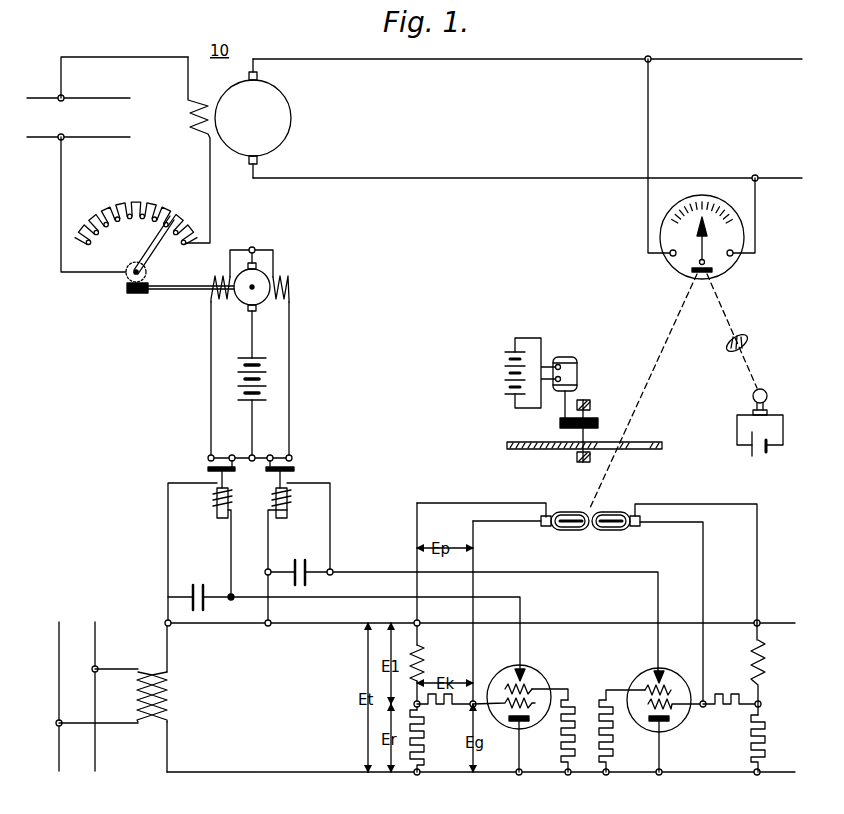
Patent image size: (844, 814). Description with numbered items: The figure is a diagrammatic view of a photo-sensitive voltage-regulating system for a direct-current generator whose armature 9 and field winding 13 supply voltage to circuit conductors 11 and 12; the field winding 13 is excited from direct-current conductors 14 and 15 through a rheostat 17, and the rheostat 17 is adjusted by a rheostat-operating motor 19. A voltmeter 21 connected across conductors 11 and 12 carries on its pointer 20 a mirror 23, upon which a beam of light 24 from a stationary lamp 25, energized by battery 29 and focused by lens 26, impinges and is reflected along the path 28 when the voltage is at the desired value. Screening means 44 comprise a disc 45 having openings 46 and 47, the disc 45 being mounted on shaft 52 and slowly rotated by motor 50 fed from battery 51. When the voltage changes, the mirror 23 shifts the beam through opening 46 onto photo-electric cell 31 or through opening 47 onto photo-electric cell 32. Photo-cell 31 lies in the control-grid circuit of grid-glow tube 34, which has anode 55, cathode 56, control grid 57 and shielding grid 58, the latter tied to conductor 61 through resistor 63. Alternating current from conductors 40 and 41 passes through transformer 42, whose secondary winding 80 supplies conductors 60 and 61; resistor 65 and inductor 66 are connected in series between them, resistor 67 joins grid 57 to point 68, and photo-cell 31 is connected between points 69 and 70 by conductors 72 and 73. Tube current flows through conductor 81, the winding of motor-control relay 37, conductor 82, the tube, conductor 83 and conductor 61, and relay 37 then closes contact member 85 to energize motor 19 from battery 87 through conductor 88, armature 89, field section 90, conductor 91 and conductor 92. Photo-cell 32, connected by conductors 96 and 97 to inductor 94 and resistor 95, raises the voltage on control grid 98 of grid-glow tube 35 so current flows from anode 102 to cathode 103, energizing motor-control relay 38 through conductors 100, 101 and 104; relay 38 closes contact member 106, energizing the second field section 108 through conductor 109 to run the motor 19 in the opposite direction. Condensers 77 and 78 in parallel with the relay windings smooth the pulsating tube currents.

The armature 9 is at (285, 95).
The circuit conductor 11 is at (521, 61).
The circuit conductor 12 is at (520, 177).
The field winding 13 is at (190, 123).
The circuit conductor 14 is at (90, 103).
The circuit conductor 15 is at (88, 142).
The rheostat 17 is at (136, 234).
The rheostat-operating motor 19 is at (251, 268).
The indicating element 20 is at (700, 264).
The measuring instrument 21 is at (665, 268).
The mirror 23 is at (738, 275).
The beam of light 24 is at (735, 321).
The lamp 25 is at (768, 395).
The focusing lens 26 is at (750, 341).
The reflected beam path 28 is at (668, 343).
The battery 29 is at (770, 452).
The photo-electric cell 31 is at (580, 529).
The photo-electric cell 32 is at (598, 530).
The grid-glow tube 34 is at (519, 686).
The grid-glow tube 35 is at (659, 689).
The motor-control relay 37 is at (200, 547).
The motor-control relay 38 is at (301, 521).
The alternating-current-circuit conductor 40 is at (59, 653).
The alternating-current-circuit conductor 41 is at (95, 656).
The transformer 42 is at (127, 745).
The screening means 44 is at (523, 423).
The disc 45 is at (664, 446).
The opening 46 is at (614, 442).
The opening 47 is at (638, 443).
The motor 50 is at (578, 376).
The battery 51 is at (505, 355).
The shaft 52 is at (592, 411).
The anode element 55 is at (528, 685).
The cathode element 56 is at (530, 721).
The control grid element 57 is at (510, 719).
The shielding grid element 58 is at (534, 691).
The conductor 60 is at (320, 626).
The conductor 61 is at (318, 771).
The resistor 63 is at (578, 706).
The resistor 65 is at (424, 736).
The inductor 66 is at (424, 661).
The resistor 67 is at (452, 708).
The point 68 is at (415, 704).
The point 69 is at (420, 622).
The point 70 is at (474, 690).
The conductor 72 is at (472, 503).
The conductor 73 is at (518, 523).
The condenser 77 is at (212, 570).
The condenser 78 is at (298, 563).
The transformer secondary winding 80 is at (168, 696).
The conductor 81 is at (168, 527).
The conductor 82 is at (232, 562).
The conductor 83 is at (519, 761).
The contact member 85 is at (222, 466).
The battery 87 is at (266, 381).
The conductor 88 is at (253, 337).
The armature 89 is at (246, 301).
The motor-field winding section 90 is at (208, 289).
The conductor 91 is at (211, 383).
The conductor 92 is at (253, 419).
The inductor 94 is at (752, 665).
The resistor 95 is at (740, 700).
The conductor 96 is at (705, 590).
The conductor 97 is at (757, 598).
The control-grid element 98 is at (672, 706).
The conductor 100 is at (268, 540).
The conductor 101 is at (330, 530).
The anode element 102 is at (656, 678).
The cathode element 103 is at (668, 721).
The conductor 104 is at (659, 746).
The contact member 106 is at (281, 466).
The field winding section 108 is at (294, 291).
The conductor 109 is at (291, 332).